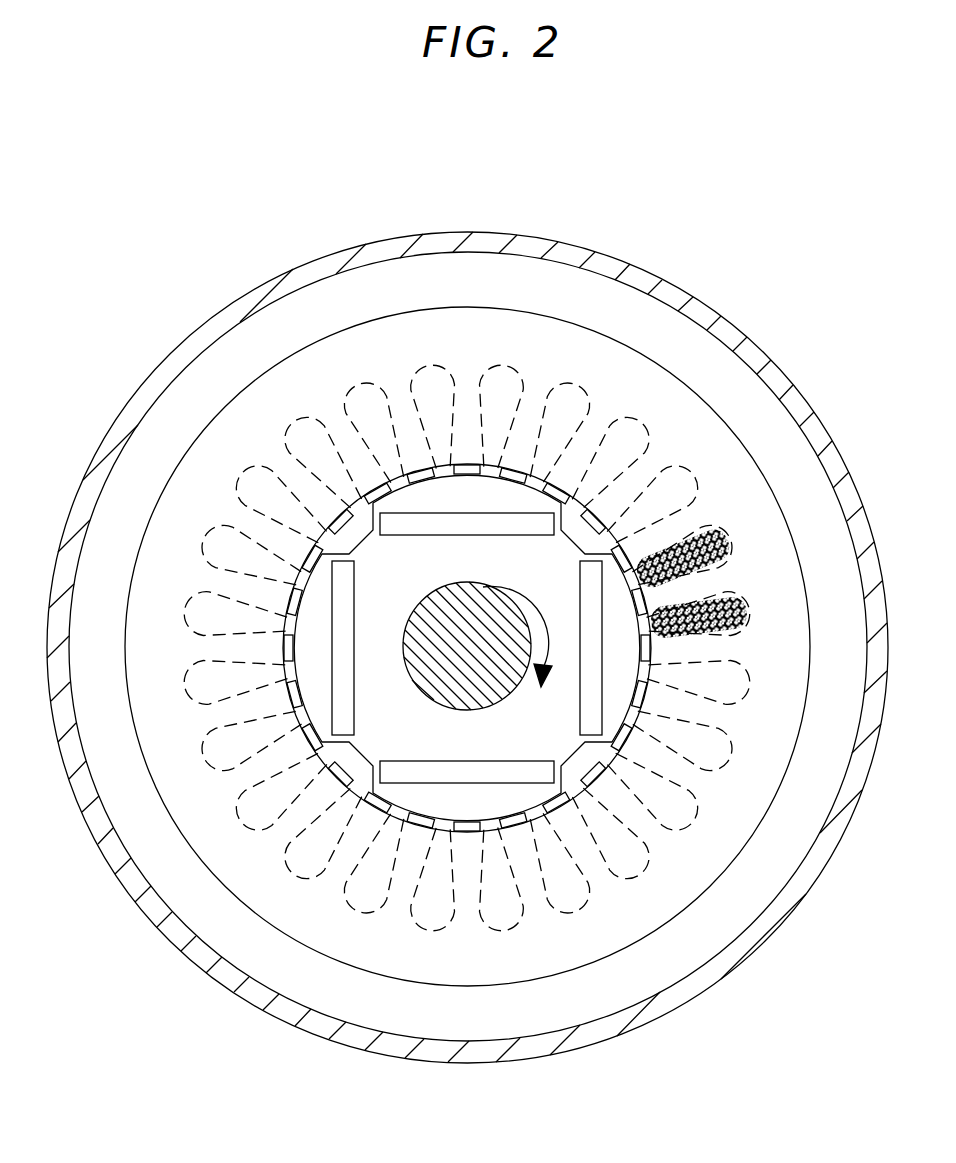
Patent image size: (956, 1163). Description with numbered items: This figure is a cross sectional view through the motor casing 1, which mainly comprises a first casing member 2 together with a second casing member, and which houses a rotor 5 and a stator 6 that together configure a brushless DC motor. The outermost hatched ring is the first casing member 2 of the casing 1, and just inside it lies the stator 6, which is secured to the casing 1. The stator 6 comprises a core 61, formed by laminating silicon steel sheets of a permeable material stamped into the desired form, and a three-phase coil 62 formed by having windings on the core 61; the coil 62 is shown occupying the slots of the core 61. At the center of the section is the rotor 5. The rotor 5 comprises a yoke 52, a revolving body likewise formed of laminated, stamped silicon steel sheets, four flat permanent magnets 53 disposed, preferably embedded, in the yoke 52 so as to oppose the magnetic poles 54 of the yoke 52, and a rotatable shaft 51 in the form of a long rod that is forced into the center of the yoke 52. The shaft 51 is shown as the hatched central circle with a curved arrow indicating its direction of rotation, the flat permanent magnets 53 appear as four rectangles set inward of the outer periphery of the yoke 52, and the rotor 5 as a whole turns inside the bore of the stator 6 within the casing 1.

The motor casing 1 is at (737, 304).
The first casing member 2 is at (780, 910).
The rotor 5 is at (568, 772).
The stator 6 is at (625, 294).
The rotatable shaft 51 is at (442, 667).
The yoke 52 is at (382, 553).
The flat permanent magnet 53 is at (347, 648).
The magnetic pole 54 is at (463, 490).
The core 61 is at (410, 413).
The coil 62 is at (730, 600).